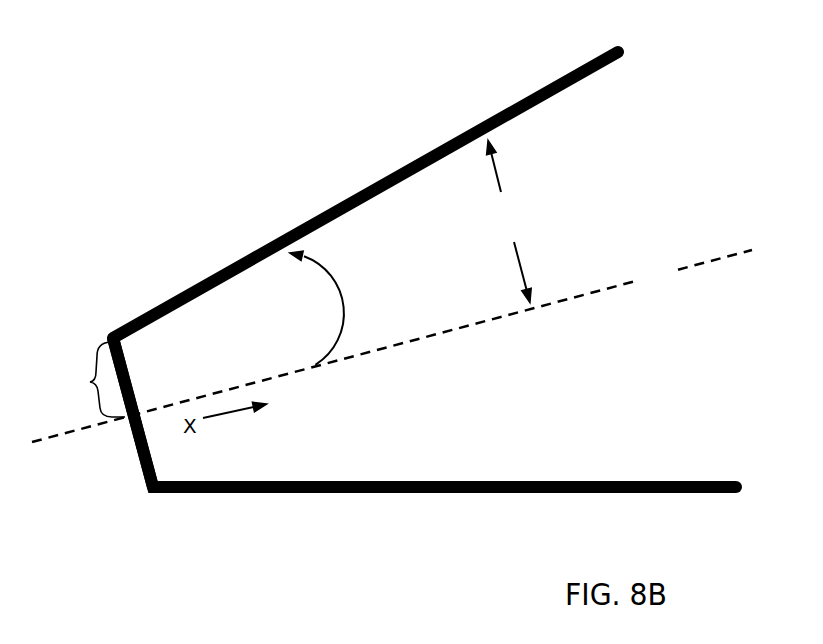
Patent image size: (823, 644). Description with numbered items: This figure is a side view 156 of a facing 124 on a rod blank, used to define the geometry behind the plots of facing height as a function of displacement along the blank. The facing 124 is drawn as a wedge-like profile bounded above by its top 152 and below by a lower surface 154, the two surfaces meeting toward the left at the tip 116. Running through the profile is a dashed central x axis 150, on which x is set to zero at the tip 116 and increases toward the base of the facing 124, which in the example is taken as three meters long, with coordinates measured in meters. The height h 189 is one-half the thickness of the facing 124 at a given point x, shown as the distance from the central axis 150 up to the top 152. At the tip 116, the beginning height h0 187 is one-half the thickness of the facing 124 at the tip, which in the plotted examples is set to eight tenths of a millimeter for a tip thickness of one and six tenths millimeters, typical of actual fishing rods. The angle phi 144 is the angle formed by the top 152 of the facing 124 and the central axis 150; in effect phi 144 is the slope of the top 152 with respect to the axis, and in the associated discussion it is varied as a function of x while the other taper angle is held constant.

The facing 124 is at (365, 195).
The top of the facing 152 is at (365, 195).
The tip 116 is at (110, 320).
The bottom surface 154 is at (424, 431).
The central x axis 150 is at (673, 287).
The height h 189 is at (537, 231).
The angle phi 144 is at (383, 301).
The beginning height h0 187 is at (90, 404).
The side view 156 is at (263, 530).